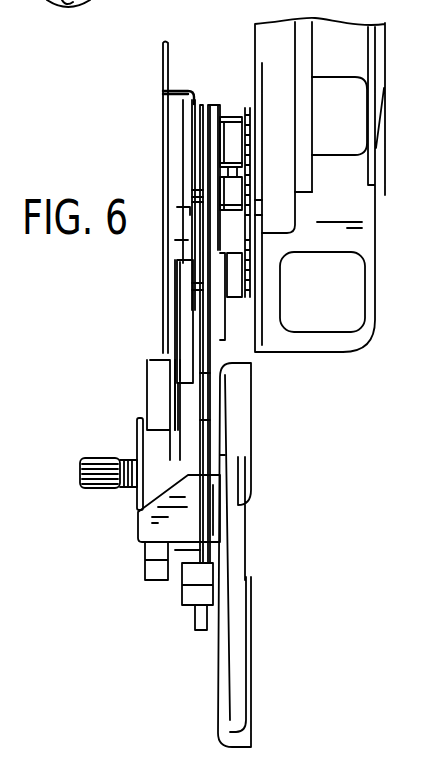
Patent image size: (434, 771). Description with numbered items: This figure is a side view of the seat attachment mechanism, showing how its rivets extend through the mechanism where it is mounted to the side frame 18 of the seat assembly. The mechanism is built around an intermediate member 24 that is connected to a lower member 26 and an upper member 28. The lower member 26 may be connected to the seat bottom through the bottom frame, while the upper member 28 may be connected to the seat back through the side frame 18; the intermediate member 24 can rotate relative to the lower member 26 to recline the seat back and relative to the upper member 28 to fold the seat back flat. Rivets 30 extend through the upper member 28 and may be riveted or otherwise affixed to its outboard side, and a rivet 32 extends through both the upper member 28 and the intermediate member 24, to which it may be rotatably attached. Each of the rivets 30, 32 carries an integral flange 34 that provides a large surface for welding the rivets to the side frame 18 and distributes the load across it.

The side frame 18 is at (318, 343).
The intermediate member 24 is at (212, 110).
The lower member 26 is at (246, 644).
The upper member 28 is at (200, 107).
The rivets 30 is at (220, 182).
The rivet 32 is at (235, 116).
The integral flange 34 is at (253, 141).